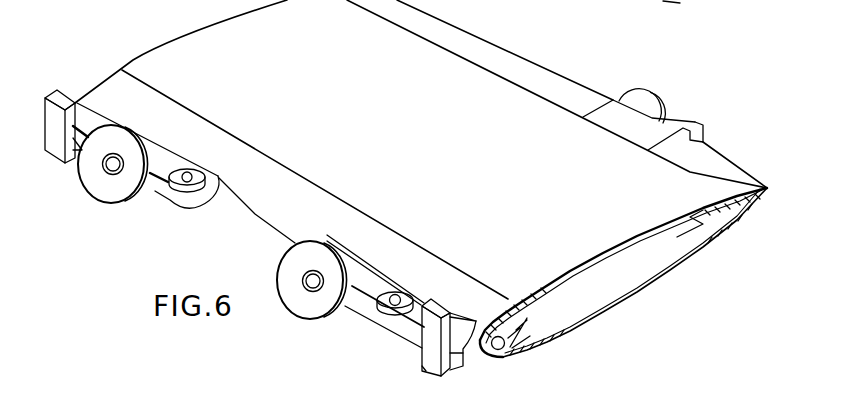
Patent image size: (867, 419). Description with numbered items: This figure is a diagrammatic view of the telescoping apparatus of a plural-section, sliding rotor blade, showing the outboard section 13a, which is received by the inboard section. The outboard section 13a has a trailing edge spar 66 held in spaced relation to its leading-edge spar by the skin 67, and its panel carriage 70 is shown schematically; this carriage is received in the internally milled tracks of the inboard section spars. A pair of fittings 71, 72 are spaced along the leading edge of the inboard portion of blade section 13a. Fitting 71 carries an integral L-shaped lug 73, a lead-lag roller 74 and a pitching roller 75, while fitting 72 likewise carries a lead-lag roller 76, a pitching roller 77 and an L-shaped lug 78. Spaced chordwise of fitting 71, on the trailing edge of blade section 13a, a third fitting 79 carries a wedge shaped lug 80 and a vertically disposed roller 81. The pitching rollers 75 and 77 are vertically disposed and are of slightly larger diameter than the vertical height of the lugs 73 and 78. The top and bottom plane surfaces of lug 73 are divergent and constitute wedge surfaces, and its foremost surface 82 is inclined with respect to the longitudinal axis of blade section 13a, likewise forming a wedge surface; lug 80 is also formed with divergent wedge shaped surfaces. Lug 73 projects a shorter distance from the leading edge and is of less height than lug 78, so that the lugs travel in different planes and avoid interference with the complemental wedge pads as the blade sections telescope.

The outboard section 13a is at (555, 341).
The trailing edge spar 66 is at (723, 220).
The skin 67 is at (613, 250).
The panel carriage 70 is at (537, 228).
The fitting 71 is at (389, 327).
The fitting 72 is at (162, 194).
The L-shaped lug 73 is at (447, 371).
The lead-lag roller 74 is at (403, 292).
The pitching roller 75 is at (304, 314).
The lead-lag roller 76 is at (192, 169).
The pitching roller 77 is at (128, 147).
The L-shaped lug 78 is at (56, 96).
The third fitting 79 is at (640, 147).
The wedge shaped lug 80 is at (698, 128).
The vertically disposed roller 81 is at (647, 95).
The foremost surface 82 is at (422, 366).